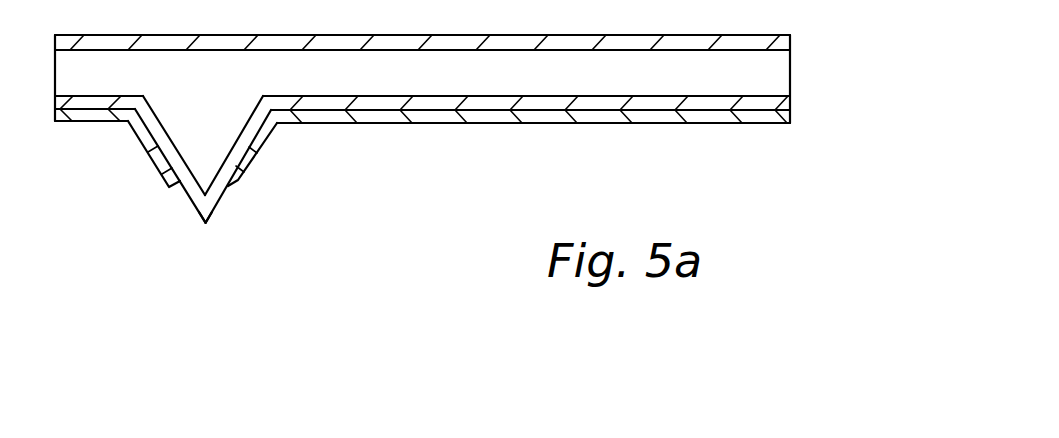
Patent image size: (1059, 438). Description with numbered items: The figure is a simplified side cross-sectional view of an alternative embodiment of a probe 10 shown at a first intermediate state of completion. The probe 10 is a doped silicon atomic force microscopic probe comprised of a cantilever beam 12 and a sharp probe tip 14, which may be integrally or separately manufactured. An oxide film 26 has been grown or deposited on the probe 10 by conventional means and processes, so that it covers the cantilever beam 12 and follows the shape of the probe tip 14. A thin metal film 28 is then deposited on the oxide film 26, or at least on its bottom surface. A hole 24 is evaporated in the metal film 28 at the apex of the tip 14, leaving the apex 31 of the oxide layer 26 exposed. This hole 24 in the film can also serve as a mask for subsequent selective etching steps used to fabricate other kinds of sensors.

The probe 10 is at (114, 224).
The cantilever beam 12 is at (768, 72).
The probe tip 14 is at (158, 142).
The hole 24 is at (235, 188).
The oxide film 26 is at (763, 36).
The thin metal film 28 is at (693, 122).
The apex of oxide layer 31 is at (204, 227).